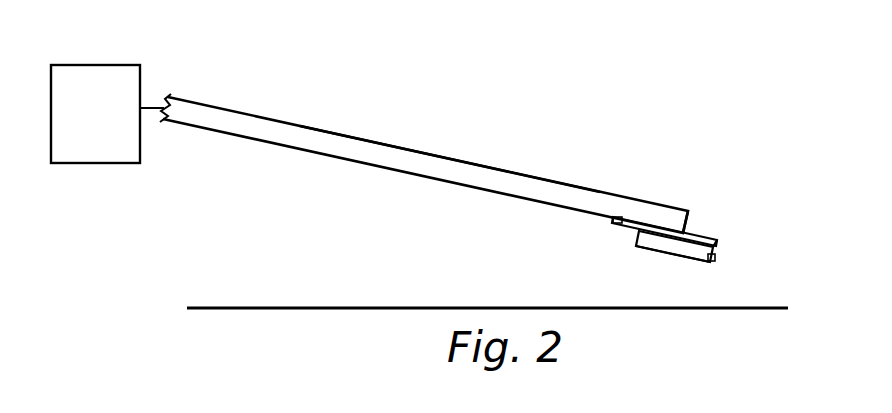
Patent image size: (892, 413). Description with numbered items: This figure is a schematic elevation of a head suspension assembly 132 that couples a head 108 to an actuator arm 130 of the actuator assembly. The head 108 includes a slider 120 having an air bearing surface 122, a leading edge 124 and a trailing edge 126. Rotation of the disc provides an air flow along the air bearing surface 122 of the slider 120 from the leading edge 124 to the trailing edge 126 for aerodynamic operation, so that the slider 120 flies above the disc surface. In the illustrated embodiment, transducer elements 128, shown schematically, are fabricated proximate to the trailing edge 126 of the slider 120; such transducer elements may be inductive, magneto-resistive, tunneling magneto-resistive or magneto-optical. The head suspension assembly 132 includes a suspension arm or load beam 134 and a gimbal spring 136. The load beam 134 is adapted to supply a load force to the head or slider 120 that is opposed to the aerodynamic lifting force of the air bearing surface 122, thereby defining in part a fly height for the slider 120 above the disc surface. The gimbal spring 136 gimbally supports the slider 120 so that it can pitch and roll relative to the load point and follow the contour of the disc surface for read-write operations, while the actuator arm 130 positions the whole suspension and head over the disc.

The head 108 is at (735, 229).
The slider 120 is at (714, 249).
The air bearing surface 122 is at (651, 250).
The leading edge 124 is at (639, 234).
The trailing edge 126 is at (714, 262).
The transducer elements 128 is at (705, 264).
The actuator arm 130 is at (130, 66).
The head suspension assembly 132 is at (369, 139).
The load beam 134 is at (447, 159).
The gimbal spring 136 is at (620, 220).